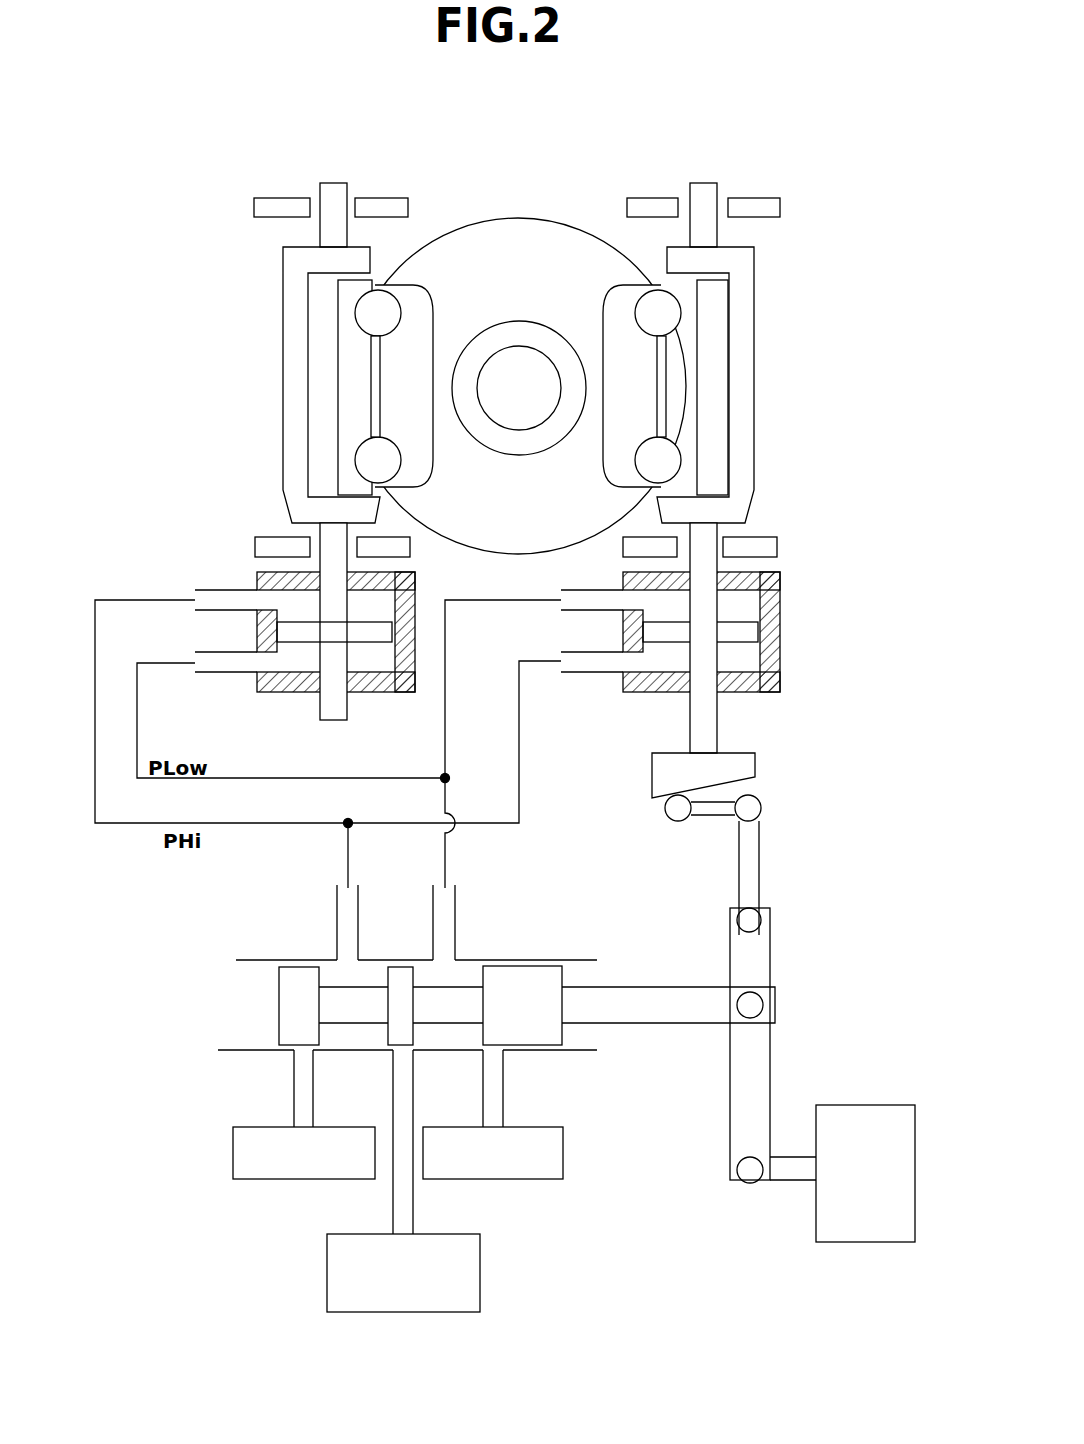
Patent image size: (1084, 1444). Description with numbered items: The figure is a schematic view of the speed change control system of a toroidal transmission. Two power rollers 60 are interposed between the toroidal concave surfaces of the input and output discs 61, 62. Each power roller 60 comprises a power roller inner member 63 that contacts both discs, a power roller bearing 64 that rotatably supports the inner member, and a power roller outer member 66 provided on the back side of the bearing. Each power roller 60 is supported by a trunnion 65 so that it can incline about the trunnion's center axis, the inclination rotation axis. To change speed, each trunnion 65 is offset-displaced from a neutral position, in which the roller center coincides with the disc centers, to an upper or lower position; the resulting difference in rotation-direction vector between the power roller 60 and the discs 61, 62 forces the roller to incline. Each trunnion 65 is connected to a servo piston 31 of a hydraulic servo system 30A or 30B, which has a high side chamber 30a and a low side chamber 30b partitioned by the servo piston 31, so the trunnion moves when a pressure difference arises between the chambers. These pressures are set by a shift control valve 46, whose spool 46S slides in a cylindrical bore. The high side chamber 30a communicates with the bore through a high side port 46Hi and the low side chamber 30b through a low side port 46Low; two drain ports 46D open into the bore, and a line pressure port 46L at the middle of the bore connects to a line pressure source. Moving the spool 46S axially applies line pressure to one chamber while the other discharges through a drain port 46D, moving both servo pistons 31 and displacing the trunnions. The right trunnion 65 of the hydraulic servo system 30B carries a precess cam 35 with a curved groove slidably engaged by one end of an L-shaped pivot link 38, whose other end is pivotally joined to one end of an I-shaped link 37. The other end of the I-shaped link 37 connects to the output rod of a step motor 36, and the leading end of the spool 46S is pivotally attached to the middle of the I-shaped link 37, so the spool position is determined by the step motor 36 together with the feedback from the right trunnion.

The input disc 61 is at (545, 212).
The output disc 62 is at (519, 388).
The power roller 60 is at (441, 292).
The power roller inner member 63 is at (395, 316).
The power roller bearing 64 is at (373, 458).
The trunnion 65 is at (276, 416).
The power roller outer member 66 is at (353, 353).
The hydraulic servo system 30A is at (474, 634).
The hydraulic servo system 30B is at (801, 537).
The high side chamber 30a is at (287, 606).
The low side chamber 30b is at (270, 660).
The servo piston 31 is at (312, 632).
The precess cam 35 is at (742, 762).
The L-shaped pivot link 38 is at (748, 863).
The I-shaped link 37 is at (750, 1050).
The step motor 36 is at (866, 1222).
The shift control valve 46 is at (422, 1098).
The high side port 46Hi is at (346, 955).
The low side port 46Low is at (445, 955).
The spool 46S is at (545, 1005).
The drain port 46D is at (303, 1055).
The line pressure port 46L is at (400, 1055).